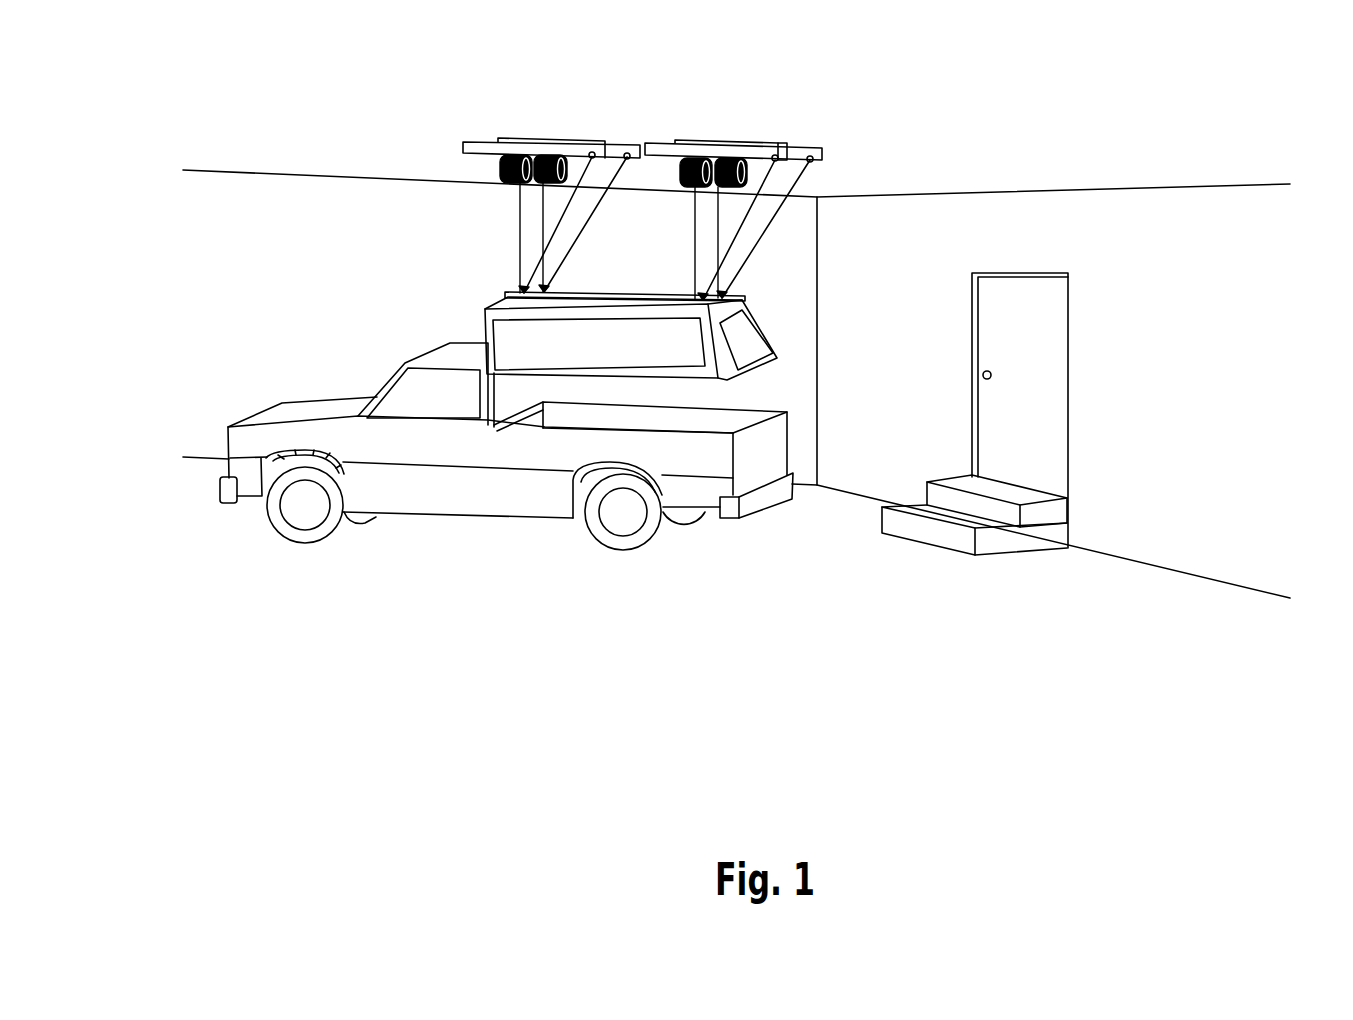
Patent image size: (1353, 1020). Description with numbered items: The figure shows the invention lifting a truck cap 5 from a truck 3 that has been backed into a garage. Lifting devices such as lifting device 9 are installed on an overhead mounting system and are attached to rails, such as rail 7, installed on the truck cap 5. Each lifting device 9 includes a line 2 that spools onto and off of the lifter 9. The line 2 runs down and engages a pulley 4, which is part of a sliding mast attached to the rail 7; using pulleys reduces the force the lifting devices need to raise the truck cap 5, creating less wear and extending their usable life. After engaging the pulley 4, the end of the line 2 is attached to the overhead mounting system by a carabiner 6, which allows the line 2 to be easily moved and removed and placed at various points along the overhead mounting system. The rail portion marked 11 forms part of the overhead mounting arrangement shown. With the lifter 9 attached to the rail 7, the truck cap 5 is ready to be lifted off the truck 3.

The line 2 is at (737, 238).
The truck 3 is at (325, 352).
The pulley 4 is at (727, 282).
The truck cap 5 is at (778, 355).
The carabiner 6 is at (781, 147).
The rail 7 is at (592, 293).
The lifting device 9 is at (678, 158).
The rail 11 is at (727, 143).